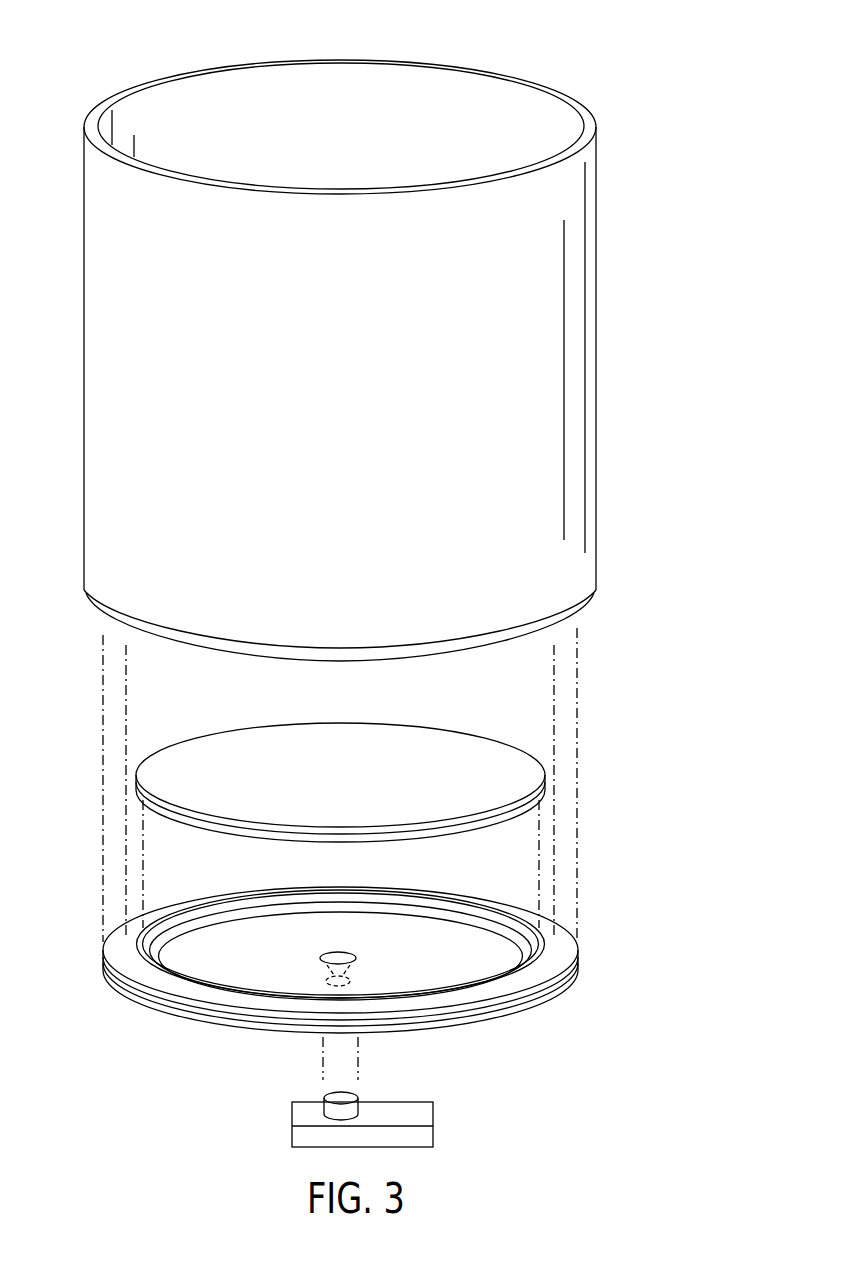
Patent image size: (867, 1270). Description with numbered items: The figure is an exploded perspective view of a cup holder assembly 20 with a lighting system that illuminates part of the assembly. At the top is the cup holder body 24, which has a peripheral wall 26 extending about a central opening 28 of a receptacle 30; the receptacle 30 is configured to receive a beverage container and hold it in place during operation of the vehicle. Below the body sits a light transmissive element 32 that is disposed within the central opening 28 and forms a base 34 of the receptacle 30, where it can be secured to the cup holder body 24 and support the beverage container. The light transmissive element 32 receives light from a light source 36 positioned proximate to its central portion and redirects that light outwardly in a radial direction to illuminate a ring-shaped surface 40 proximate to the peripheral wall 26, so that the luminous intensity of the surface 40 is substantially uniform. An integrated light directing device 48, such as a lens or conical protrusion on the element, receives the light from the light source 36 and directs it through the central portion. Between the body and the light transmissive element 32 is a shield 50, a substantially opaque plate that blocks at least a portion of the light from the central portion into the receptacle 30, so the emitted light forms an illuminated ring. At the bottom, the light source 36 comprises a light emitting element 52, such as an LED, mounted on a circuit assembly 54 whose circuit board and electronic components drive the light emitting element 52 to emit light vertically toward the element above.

The cup holder assembly 20 is at (376, 337).
The cup holder body 24 is at (595, 208).
The peripheral wall 26 is at (350, 395).
The central opening 28 is at (389, 92).
The receptacle 30 is at (185, 62).
The light transmissive element 32 is at (572, 962).
The base 34 is at (382, 924).
The light source 36 is at (375, 1106).
The surface 40 is at (556, 950).
The light directing device 48 is at (340, 952).
The shield 50 is at (420, 724).
The light emitting element 52 is at (338, 1092).
The circuit assembly 54 is at (292, 1133).